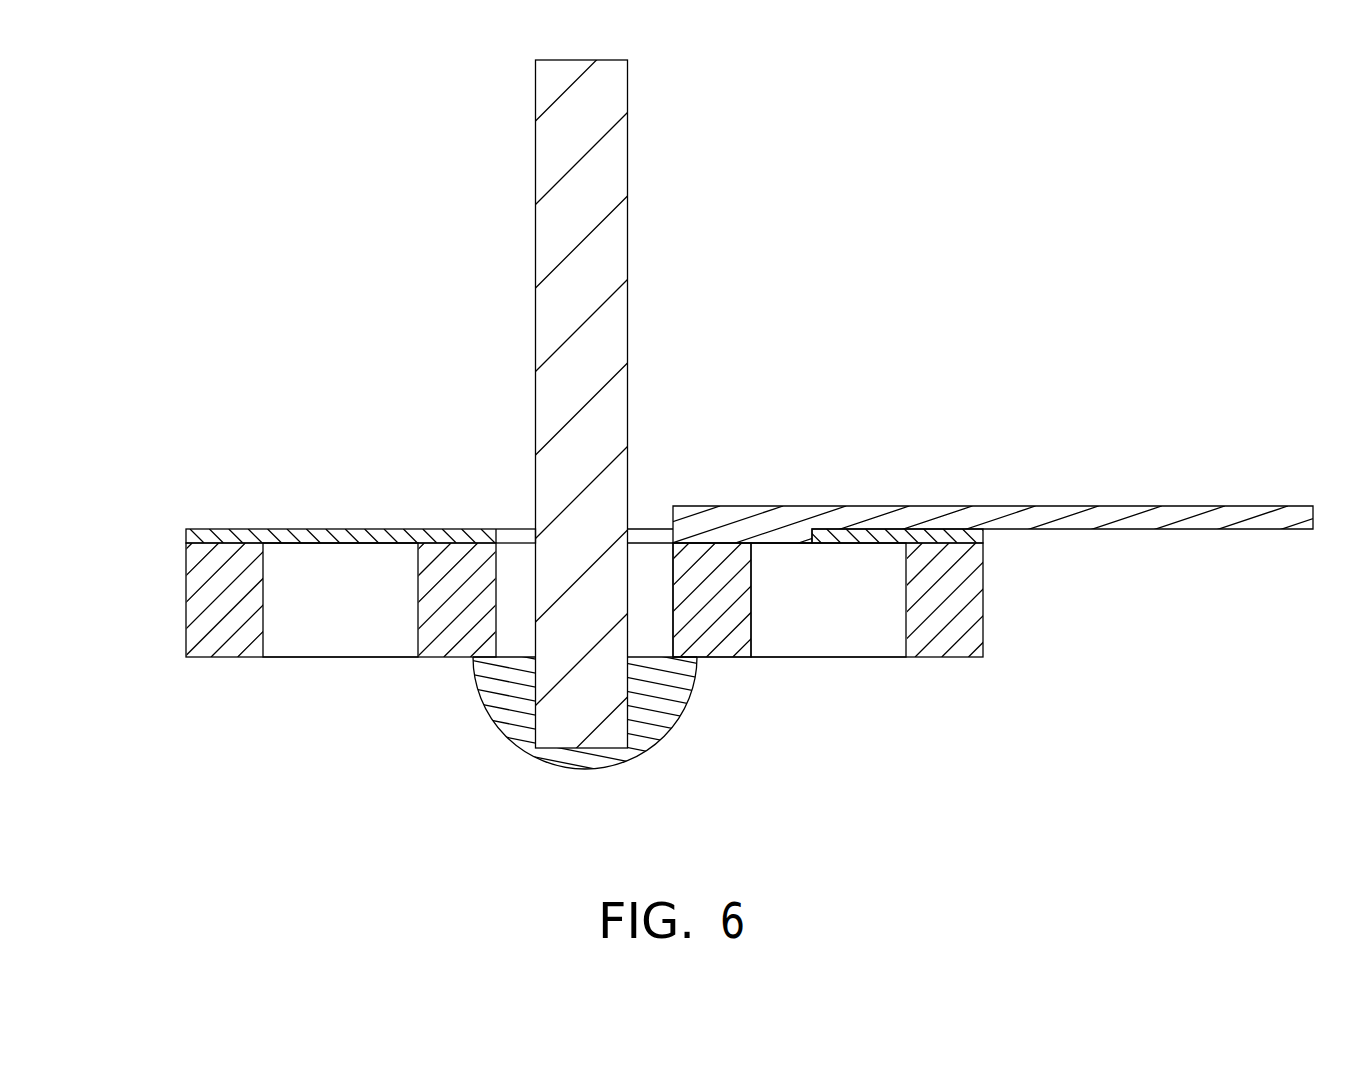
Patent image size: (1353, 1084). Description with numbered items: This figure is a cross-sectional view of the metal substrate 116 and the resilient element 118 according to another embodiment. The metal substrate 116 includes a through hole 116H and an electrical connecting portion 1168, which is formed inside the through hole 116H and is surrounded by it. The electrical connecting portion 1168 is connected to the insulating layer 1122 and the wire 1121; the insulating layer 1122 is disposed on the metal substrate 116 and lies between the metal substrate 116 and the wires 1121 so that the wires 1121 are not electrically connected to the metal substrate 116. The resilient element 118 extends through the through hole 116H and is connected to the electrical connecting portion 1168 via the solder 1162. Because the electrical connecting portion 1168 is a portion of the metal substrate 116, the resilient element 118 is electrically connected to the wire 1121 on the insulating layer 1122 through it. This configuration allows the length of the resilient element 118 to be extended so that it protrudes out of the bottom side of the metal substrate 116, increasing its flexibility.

The metal substrate 116 is at (580, 652).
The through hole 116H is at (342, 635).
The solder 1162 is at (587, 757).
The electrical connecting portion 1168 is at (718, 630).
The resilient element 118 is at (582, 274).
The wires 1121 is at (742, 528).
The insulating layer 1122 is at (343, 536).